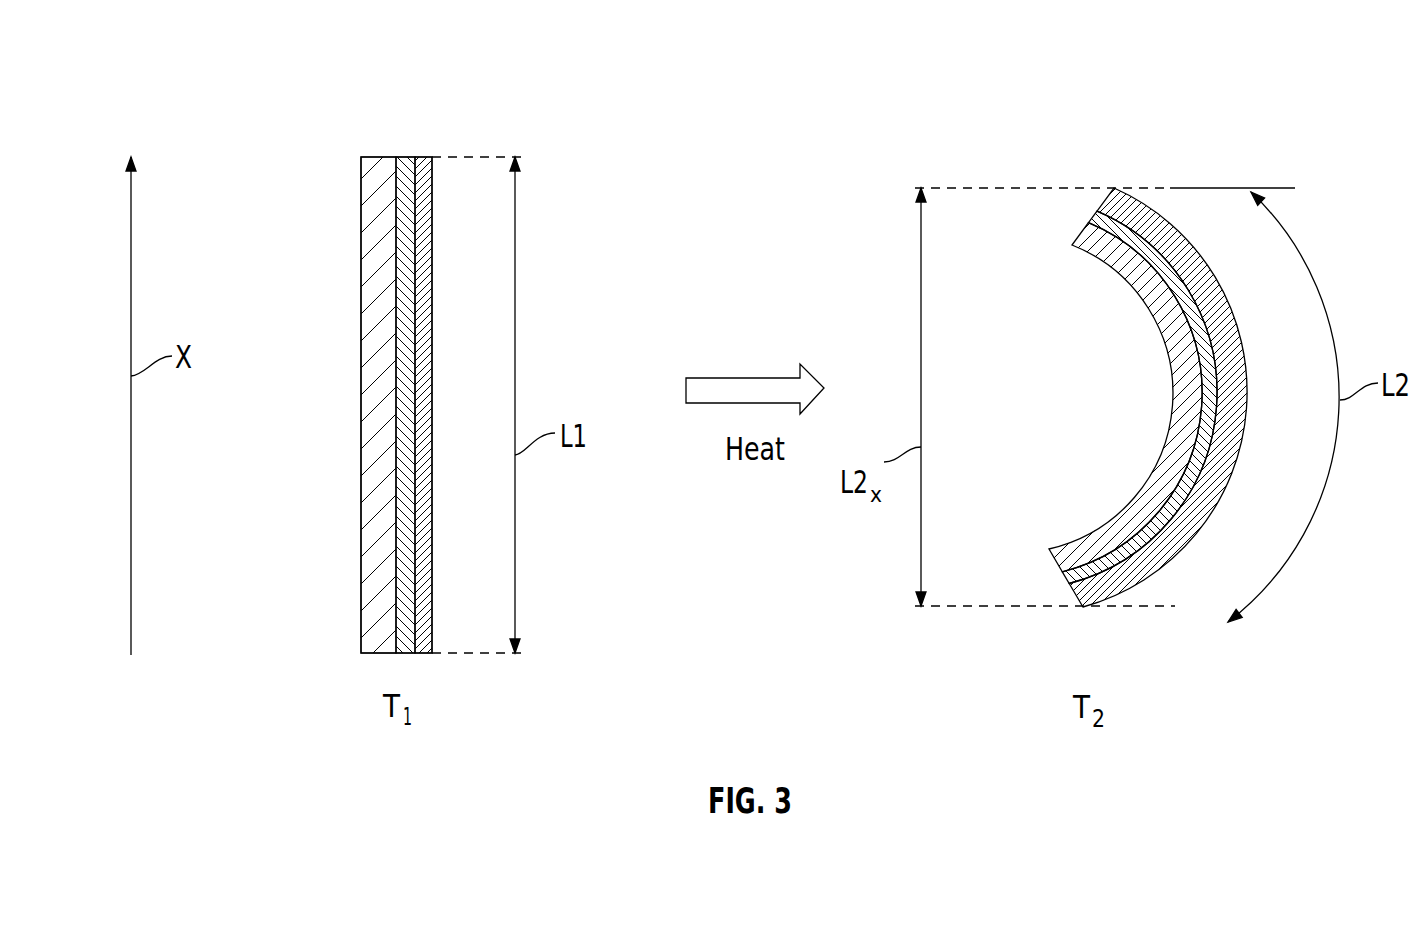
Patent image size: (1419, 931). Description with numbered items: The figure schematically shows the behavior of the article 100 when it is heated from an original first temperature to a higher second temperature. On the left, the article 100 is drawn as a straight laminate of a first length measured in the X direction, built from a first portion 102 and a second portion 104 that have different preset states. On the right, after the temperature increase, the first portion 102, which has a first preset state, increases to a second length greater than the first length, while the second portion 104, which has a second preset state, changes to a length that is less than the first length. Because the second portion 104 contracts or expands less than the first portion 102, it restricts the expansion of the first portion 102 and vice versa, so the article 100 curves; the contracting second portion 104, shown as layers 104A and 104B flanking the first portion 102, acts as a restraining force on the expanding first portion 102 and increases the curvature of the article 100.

The article 100 is at (307, 97).
The first portion 102 is at (430, 157).
The second portion 104 is at (368, 300).
The first outer layer 104A is at (1148, 295).
The second outer layer 104B is at (1108, 592).